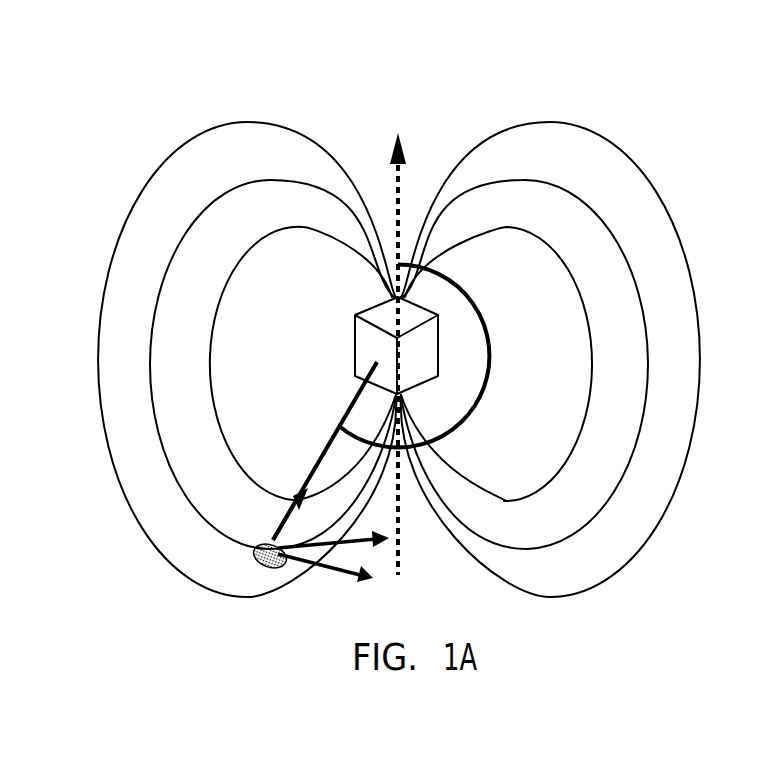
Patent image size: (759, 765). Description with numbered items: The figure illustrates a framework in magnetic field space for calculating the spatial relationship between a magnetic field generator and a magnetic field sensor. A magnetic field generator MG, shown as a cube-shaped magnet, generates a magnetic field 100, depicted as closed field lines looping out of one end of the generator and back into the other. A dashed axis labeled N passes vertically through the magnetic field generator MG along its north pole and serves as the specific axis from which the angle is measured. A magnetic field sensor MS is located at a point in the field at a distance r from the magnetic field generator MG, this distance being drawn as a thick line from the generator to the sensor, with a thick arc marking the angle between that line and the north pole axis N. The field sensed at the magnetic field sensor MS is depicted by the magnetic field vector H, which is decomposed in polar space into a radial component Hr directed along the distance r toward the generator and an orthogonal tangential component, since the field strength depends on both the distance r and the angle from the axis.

The magnetic field 100 is at (257, 236).
The magnetic field generator MG is at (372, 345).
The magnetic field sensor MS is at (252, 556).
The north pole axis N is at (399, 336).
The distance r is at (325, 451).
The magnetic field vector H is at (335, 528).
The radial component Hr is at (290, 502).